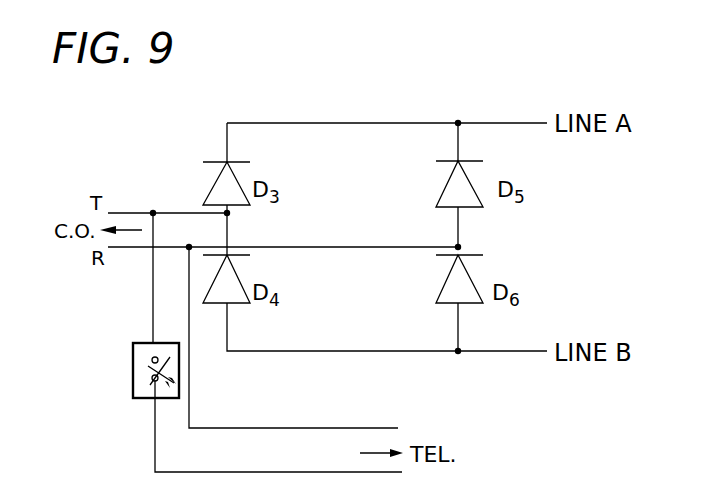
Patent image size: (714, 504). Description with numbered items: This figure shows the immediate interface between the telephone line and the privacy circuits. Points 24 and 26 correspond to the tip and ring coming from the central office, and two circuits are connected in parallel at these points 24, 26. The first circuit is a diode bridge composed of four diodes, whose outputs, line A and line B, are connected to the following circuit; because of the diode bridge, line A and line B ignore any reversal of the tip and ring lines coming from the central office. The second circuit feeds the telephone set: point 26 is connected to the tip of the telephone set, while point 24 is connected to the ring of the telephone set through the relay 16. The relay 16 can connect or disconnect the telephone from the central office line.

The relay 16 is at (133, 394).
The tip point 24 is at (153, 212).
The ring point 26 is at (186, 225).